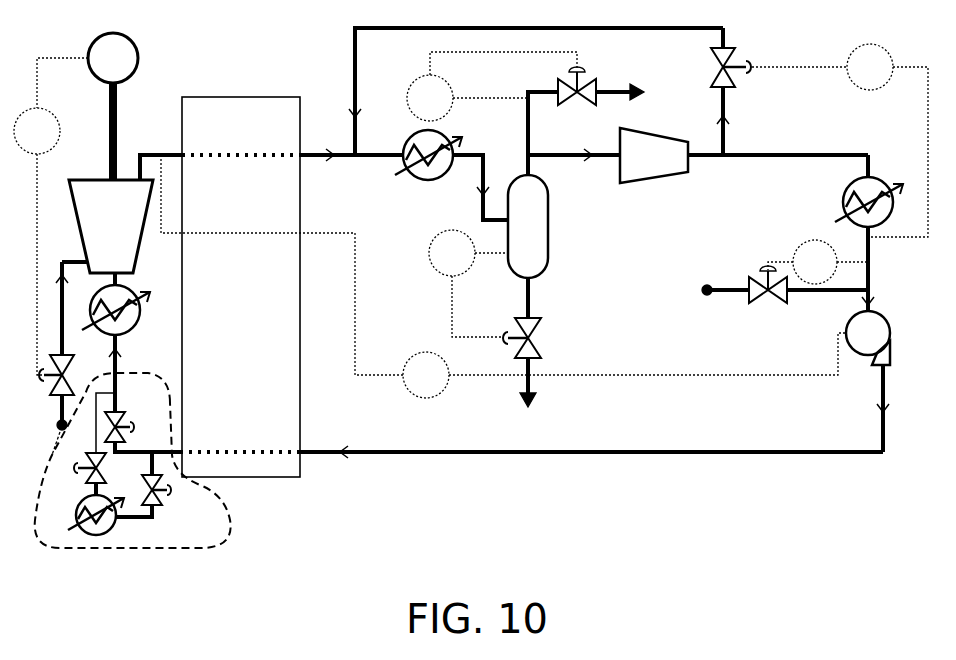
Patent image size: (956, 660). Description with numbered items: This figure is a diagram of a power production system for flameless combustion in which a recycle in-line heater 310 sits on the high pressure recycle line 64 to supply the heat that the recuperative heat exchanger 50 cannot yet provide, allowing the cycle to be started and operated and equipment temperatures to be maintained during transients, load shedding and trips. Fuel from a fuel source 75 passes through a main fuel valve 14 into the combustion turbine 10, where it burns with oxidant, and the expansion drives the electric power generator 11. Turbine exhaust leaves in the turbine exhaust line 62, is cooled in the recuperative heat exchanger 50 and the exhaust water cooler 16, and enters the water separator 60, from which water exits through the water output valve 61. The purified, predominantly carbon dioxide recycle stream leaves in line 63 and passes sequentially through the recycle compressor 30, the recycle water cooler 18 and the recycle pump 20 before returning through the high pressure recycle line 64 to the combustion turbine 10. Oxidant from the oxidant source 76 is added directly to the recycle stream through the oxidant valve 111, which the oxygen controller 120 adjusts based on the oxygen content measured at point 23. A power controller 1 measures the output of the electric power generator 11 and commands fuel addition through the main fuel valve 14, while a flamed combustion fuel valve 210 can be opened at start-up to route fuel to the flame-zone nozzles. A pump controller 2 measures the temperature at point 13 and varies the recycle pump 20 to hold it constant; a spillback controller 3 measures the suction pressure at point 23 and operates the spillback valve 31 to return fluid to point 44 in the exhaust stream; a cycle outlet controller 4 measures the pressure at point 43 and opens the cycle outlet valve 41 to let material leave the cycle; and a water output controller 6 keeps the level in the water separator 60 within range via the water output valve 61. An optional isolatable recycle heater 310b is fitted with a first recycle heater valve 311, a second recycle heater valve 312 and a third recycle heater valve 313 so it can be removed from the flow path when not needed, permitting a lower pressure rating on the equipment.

The power controller 1 is at (51, 106).
The pump controller 2 is at (503, 276).
The spillback controller 3 is at (840, 140).
The cycle outlet controller 4 is at (492, 86).
The water output controller 6 is at (468, 283).
The combustion turbine 10 is at (111, 226).
The electric power generator 11 is at (113, 106).
The point 13 is at (271, 158).
The main fuel valve 14 is at (67, 343).
The exhaust water cooler 16 is at (451, 175).
The recycle water cooler 18 is at (866, 191).
The recycle pump 20 is at (868, 381).
The point 23 is at (857, 269).
The recycle compressor 30 is at (698, 155).
The spillback valve 31 is at (721, 91).
The cycle outlet valve 41 is at (601, 95).
The point 43 is at (529, 133).
The point 44 is at (533, 101).
The recuperative heat exchanger 50 is at (241, 287).
The water separator 60 is at (528, 226).
The water output valve 61 is at (533, 342).
The turbine exhaust line 62 is at (140, 178).
The line 63 is at (531, 162).
The high pressure recycle line 64 is at (455, 449).
The fuel source 75 is at (53, 446).
The oxidant source 76 is at (703, 298).
The oxidant valve 111 is at (787, 293).
The oxygen controller 120 is at (818, 262).
The flamed combustion fuel valve 210 is at (48, 264).
The recycle in-line heater 310 is at (122, 342).
The recycle heater 310b is at (113, 521).
The first recycle heater valve 311 is at (125, 425).
The second recycle heater valve 312 is at (165, 486).
The third recycle heater valve 313 is at (104, 444).